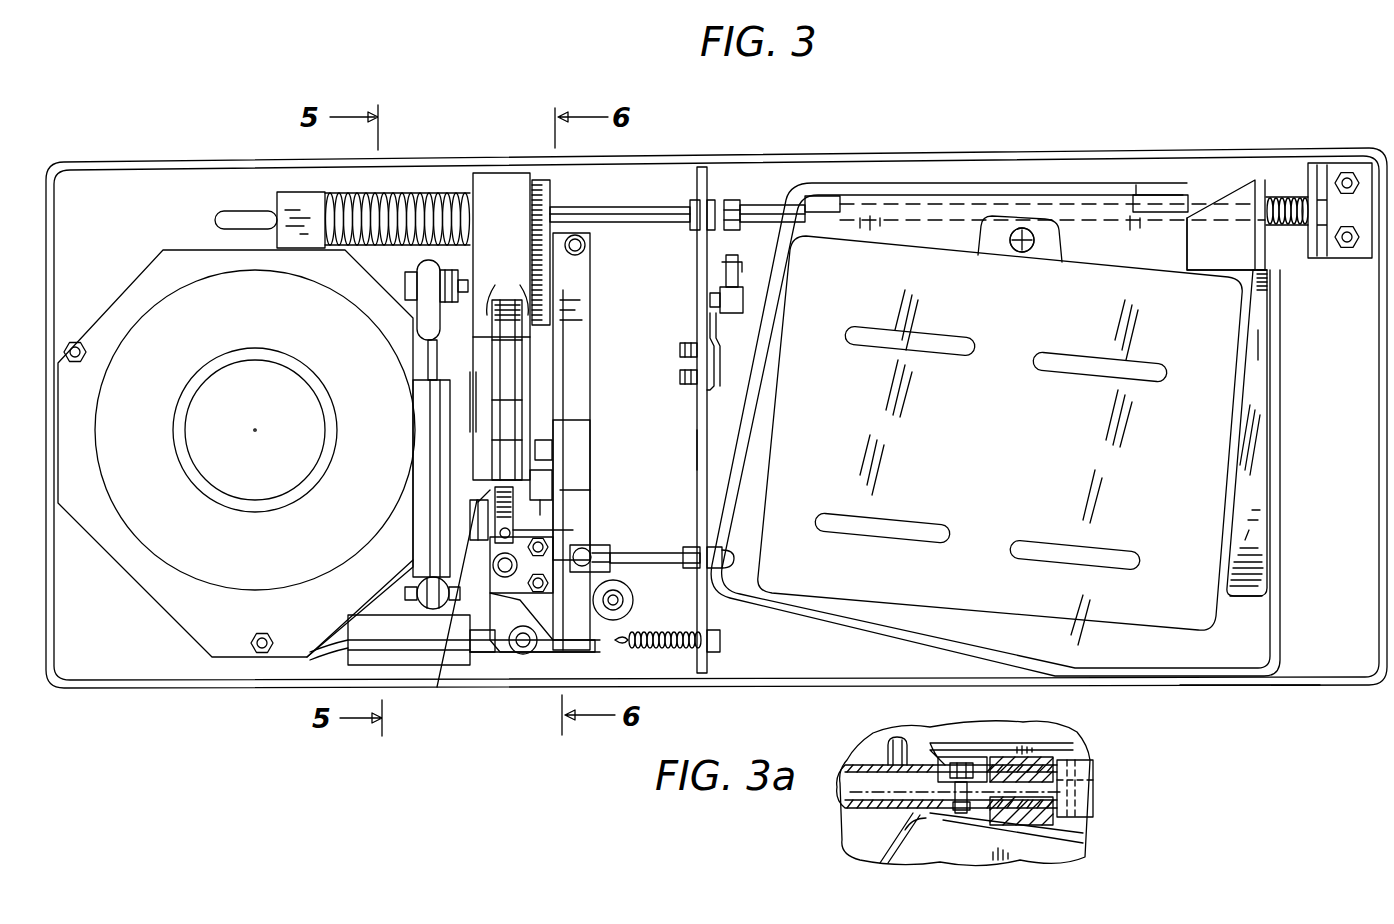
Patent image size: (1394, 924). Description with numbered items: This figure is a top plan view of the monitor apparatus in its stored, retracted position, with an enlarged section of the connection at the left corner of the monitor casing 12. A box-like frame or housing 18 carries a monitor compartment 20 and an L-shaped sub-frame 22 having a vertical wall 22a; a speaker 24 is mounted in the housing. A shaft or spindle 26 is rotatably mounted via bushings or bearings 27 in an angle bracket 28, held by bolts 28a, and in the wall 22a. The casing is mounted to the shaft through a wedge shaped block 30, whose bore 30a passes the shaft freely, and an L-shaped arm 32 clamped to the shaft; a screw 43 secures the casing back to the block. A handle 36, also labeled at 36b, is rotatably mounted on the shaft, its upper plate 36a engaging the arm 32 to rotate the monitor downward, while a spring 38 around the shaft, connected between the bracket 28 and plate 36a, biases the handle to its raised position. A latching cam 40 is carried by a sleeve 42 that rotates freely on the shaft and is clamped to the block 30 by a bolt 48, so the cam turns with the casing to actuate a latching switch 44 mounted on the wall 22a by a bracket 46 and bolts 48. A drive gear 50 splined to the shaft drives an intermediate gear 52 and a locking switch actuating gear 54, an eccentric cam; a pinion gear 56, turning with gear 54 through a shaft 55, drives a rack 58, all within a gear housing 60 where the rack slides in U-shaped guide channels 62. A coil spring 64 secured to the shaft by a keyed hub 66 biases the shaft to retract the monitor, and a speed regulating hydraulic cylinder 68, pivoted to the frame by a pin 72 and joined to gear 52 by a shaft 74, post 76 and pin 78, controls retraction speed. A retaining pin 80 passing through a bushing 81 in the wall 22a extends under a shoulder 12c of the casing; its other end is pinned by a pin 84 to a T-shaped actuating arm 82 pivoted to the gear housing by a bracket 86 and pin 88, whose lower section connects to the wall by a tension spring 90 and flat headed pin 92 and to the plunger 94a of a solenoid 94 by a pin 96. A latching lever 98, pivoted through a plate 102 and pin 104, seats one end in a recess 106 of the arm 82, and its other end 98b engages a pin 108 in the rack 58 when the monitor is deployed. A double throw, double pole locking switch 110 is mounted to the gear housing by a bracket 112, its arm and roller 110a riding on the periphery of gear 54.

In FIG. 3, the monitor casing 12 is at (1000, 435).
In FIG. 3, the shoulder 12c is at (733, 556).
In FIG. 3, the frame or housing 18 is at (1254, 698).
In FIG. 3, the monitor compartment 20 is at (1280, 622).
In FIG. 3, the L-shaped sub-frame 22 is at (684, 490).
In FIG. 3, the vertical wall 22a is at (697, 447).
In FIG. 3, the speaker 24 is at (270, 318).
In FIG. 3, the shaft or spindle 26 is at (224, 210).
In FIG. 3a, the shaft or spindle 26 is at (862, 780).
In FIG. 3, the bushings or bearings 27 is at (700, 200).
In FIG. 3, the angle bracket 28 is at (1352, 262).
In FIG. 3, the bolts 28a is at (1348, 175).
In FIG. 3, the wedge shaped block 30 is at (1148, 257).
In FIG. 3a, the wedge shaped block 30 is at (1070, 757).
In FIG. 3, the bore 30a is at (898, 210).
In FIG. 3, the L-shaped arm 32 is at (1178, 187).
In FIG. 3, the handle 36 is at (1258, 522).
In FIG. 3, the plate 36a is at (1242, 253).
In FIG. 3, the strip lower end 36b is at (1252, 596).
In FIG. 3, the spring 38 is at (1287, 222).
In FIG. 3, the latching cam 40 is at (733, 200).
In FIG. 3, the sleeve 42 is at (788, 204).
In FIG. 3a, the sleeve 42 is at (898, 738).
In FIG. 3, the screw 43 is at (1025, 227).
In FIG. 3, the latching switch 44 is at (745, 297).
In FIG. 3a, the latching switch 44 is at (962, 762).
In FIG. 3, the bracket 46 is at (704, 332).
In FIG. 3, the bolts 48 is at (694, 316).
In FIG. 3, the drive gear 50 is at (553, 193).
In FIG. 3, the intermediate gear 52 is at (589, 288).
In FIG. 3, the locking switch actuating gear 54 is at (563, 425).
In FIG. 3, the shaft 55 is at (470, 381).
In FIG. 3, the pinion gear 56 is at (437, 367).
In FIG. 3, the rack 58 is at (513, 520).
In FIG. 3, the gear housing 60 is at (511, 212).
In FIG. 3, the U-shaped guide channels 62 is at (492, 298).
In FIG. 3, the coil spring 64 is at (415, 195).
In FIG. 3, the keyed hub 66 is at (300, 192).
In FIG. 3, the speed regulating hydraulic cylinder 68 is at (406, 566).
In FIG. 3, the pin 72 is at (413, 595).
In FIG. 3, the shaft 74 is at (448, 312).
In FIG. 3, the post 76 is at (418, 268).
In FIG. 3, the pin 78 is at (407, 287).
In FIG. 3, the retaining pin 80 is at (660, 575).
In FIG. 3, the bushing 81 is at (705, 553).
In FIG. 3, the T-shaped actuating arm 82 is at (560, 492).
In FIG. 3, the pin 84 is at (618, 563).
In FIG. 3, the bracket 86 is at (588, 247).
In FIG. 3, the pin 88 is at (575, 245).
In FIG. 3, the tension spring 90 is at (647, 652).
In FIG. 3, the flat headed pin 92 is at (720, 642).
In FIG. 3, the solenoid 94 is at (432, 642).
In FIG. 3, the plunger 94a is at (490, 660).
In FIG. 3, the pin 96 is at (520, 660).
In FIG. 3, the latching lever 98 is at (528, 583).
In FIG. 3, the other end of lever 98b is at (475, 510).
In FIG. 3, the plate 102 is at (580, 643).
In FIG. 3, the pin 104 is at (437, 687).
In FIG. 3, the recess 106 is at (540, 655).
In FIG. 3, the pin 108 is at (573, 530).
In FIG. 3, the locking switch 110 is at (552, 473).
In FIG. 3, the actuating arm and roller 110a is at (552, 449).
In FIG. 3, the bracket 112 is at (475, 490).